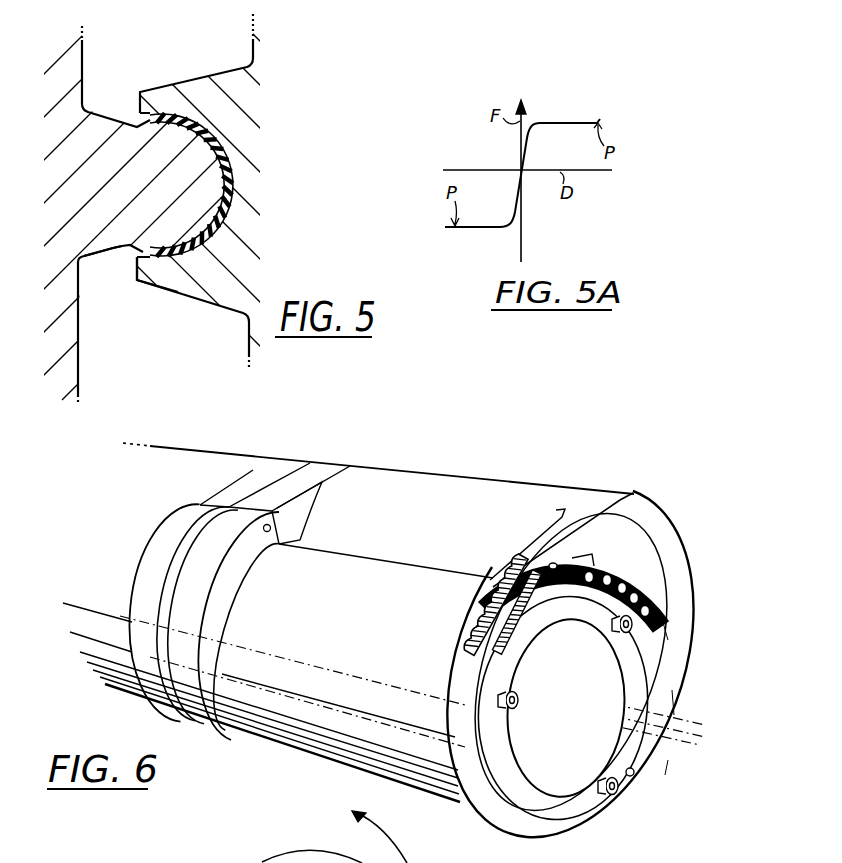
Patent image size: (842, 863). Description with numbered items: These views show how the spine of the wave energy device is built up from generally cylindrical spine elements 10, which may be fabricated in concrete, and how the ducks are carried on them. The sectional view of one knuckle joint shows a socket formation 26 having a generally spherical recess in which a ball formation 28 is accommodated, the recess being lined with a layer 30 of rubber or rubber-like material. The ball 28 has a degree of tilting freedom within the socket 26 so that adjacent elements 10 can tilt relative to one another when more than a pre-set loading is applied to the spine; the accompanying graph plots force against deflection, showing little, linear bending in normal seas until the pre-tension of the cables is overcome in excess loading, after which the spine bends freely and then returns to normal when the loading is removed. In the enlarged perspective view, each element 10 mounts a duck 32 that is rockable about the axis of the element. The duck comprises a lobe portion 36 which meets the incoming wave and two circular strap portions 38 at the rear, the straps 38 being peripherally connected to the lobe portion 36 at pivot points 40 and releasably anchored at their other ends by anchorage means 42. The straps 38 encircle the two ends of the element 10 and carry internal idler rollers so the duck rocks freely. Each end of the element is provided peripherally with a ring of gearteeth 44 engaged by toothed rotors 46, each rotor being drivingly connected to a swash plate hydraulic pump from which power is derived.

In FIG. 6, the spine element 10 is at (105, 682).
In FIG. 5, the socket formation 26 is at (175, 105).
In FIG. 6, the socket formation 26 is at (507, 682).
In FIG. 5, the ball formation 28 is at (116, 252).
In FIG. 5, the layer of rubber 30 is at (173, 260).
In FIG. 6, the duck 32 is at (606, 497).
In FIG. 6, the lobe portion 36 is at (670, 537).
In FIG. 6, the circular strap portion 38 is at (217, 538).
In FIG. 6, the pivot point 40 is at (637, 777).
In FIG. 6, the anchorage means 42 is at (488, 602).
In FIG. 6, the ring of gearteeth 44 is at (634, 653).
In FIG. 6, the toothed rotor 46 is at (613, 566).